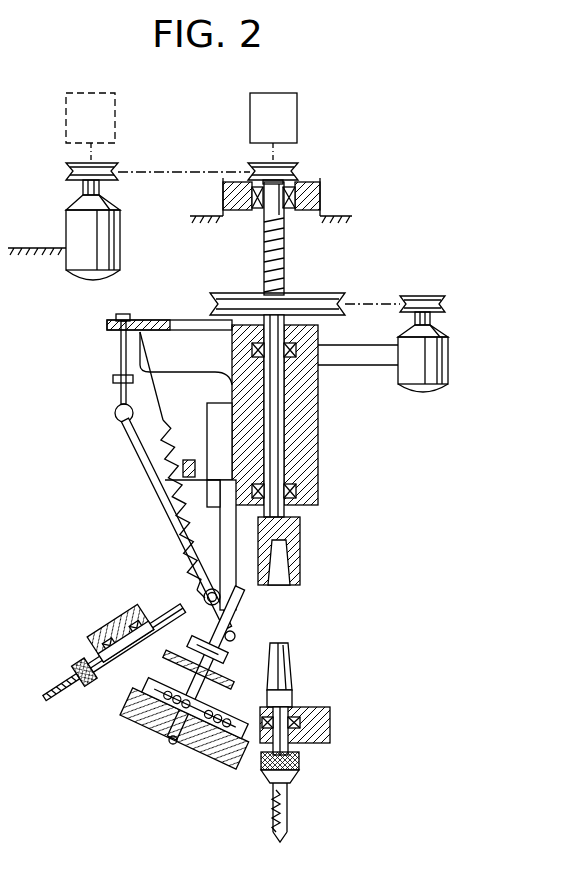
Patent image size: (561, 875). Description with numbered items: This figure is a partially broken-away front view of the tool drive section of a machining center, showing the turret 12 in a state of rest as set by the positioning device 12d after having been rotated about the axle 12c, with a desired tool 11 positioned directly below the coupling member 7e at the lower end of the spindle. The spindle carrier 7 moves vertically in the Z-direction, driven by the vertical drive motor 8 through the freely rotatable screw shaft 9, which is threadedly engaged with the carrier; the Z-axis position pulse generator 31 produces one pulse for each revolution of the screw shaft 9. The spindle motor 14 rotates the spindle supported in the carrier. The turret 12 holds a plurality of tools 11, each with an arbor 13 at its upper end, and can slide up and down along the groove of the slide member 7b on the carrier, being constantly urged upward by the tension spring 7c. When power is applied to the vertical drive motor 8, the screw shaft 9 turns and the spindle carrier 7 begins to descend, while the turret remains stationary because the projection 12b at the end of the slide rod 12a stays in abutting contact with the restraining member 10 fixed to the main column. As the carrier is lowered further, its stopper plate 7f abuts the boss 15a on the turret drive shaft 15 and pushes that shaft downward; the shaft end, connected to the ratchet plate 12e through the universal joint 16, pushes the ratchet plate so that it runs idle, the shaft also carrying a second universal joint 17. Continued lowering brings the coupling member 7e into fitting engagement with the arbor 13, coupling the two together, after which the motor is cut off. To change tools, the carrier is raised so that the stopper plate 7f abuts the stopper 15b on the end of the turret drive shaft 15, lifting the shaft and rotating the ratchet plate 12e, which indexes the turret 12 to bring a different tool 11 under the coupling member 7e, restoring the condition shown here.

The Z-axis position pulse generator 31 is at (115, 118).
The vertical drive motor 8 is at (75, 233).
The screw shaft 9 is at (290, 252).
The spindle carrier 7 is at (310, 447).
The slide member 7b is at (227, 423).
The tension spring 7c is at (185, 470).
The coupling member 7e is at (302, 535).
The stopper plate 7f is at (148, 322).
The restraining member 10 is at (190, 462).
The tool 11 is at (290, 812).
The turret 12 is at (103, 623).
The slide rod 12a is at (223, 537).
The projection 12b is at (200, 492).
The axle 12c is at (227, 623).
The positioning device 12d is at (163, 742).
The ratchet plate 12e is at (255, 650).
The arbor 13 is at (295, 702).
The spindle motor 14 is at (450, 362).
The turret drive shaft 15 is at (150, 469).
The boss 15a is at (112, 379).
The stopper 15b is at (114, 320).
The universal joint 16 is at (238, 665).
The universal joint 17 is at (114, 416).